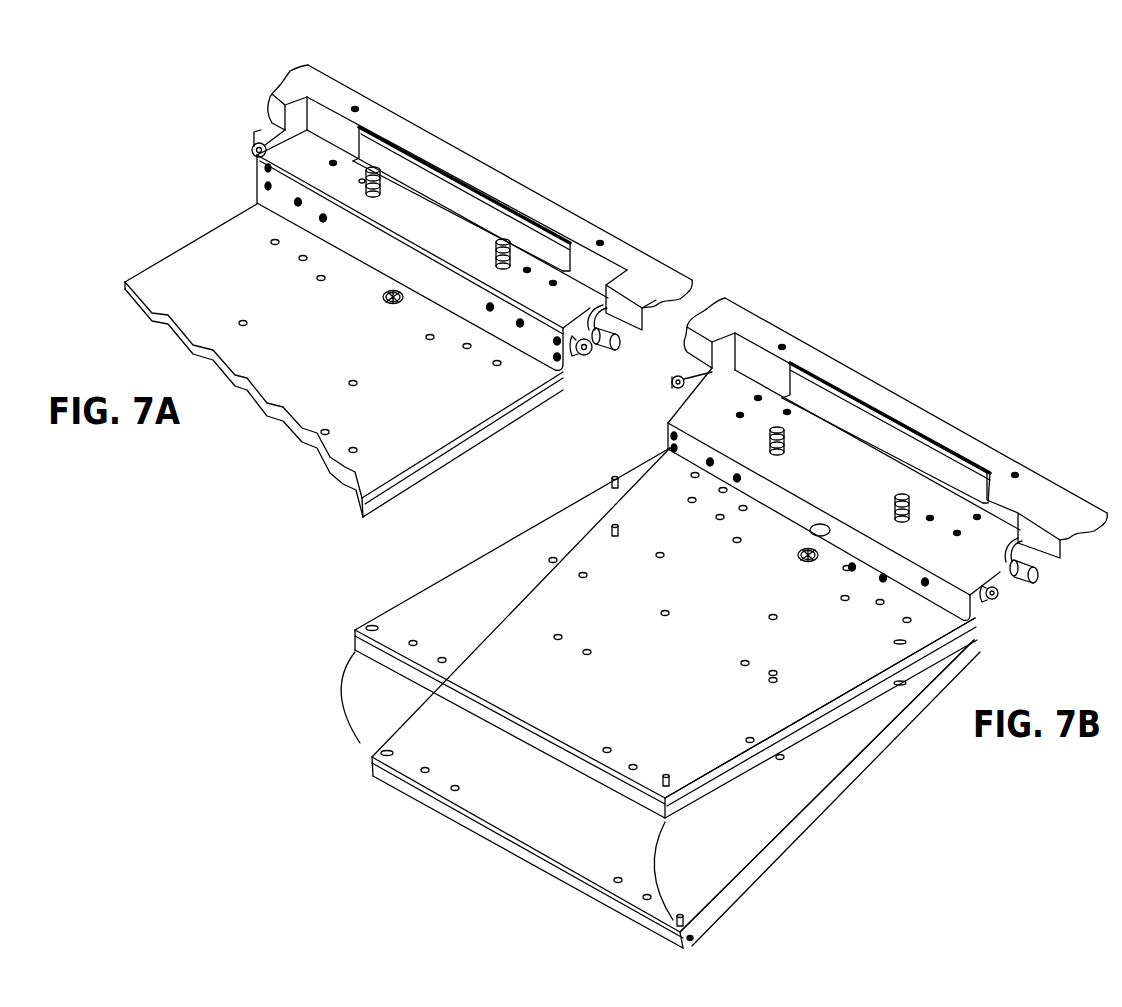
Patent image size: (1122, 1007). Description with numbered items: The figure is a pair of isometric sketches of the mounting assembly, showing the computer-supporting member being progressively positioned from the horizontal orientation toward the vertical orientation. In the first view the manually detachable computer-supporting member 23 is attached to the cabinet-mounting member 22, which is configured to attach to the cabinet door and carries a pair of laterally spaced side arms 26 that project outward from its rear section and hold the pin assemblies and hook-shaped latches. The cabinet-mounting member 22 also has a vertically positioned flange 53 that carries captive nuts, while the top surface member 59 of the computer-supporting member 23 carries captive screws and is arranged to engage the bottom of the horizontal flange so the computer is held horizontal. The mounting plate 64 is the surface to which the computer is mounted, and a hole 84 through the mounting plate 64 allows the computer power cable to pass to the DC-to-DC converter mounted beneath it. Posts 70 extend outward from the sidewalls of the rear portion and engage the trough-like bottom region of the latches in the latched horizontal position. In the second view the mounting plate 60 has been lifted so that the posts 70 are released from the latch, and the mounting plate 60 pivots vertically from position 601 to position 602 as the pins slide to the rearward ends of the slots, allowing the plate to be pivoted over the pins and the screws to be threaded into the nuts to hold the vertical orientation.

In FIG. 7A, the cabinet-mounting member 22 is at (630, 232).
In FIG. 7A, the computer-supporting member 23 is at (437, 466).
In FIG. 7B, the computer-supporting member 23 is at (737, 893).
In FIG. 7A, the side arms 26 is at (592, 350).
In FIG. 7A, the vertically positioned flange 53 is at (432, 193).
In FIG. 7B, the vertically positioned flange 53 is at (848, 427).
In FIG. 7B, the top surface member 59 is at (856, 495).
In FIG. 7B, the mounting plate 60 is at (718, 775).
In FIG. 7B, the first position of mounting plate 601 is at (828, 718).
In FIG. 7B, the second position of mounting plate 602 is at (811, 816).
In FIG. 7A, the mounting plate 64 is at (416, 399).
In FIG. 7A, the posts 70 is at (588, 357).
In FIG. 7B, the posts 70 is at (1002, 582).
In FIG. 7A, the hole 84 is at (386, 302).
In FIG. 7B, the hole 84 is at (797, 560).